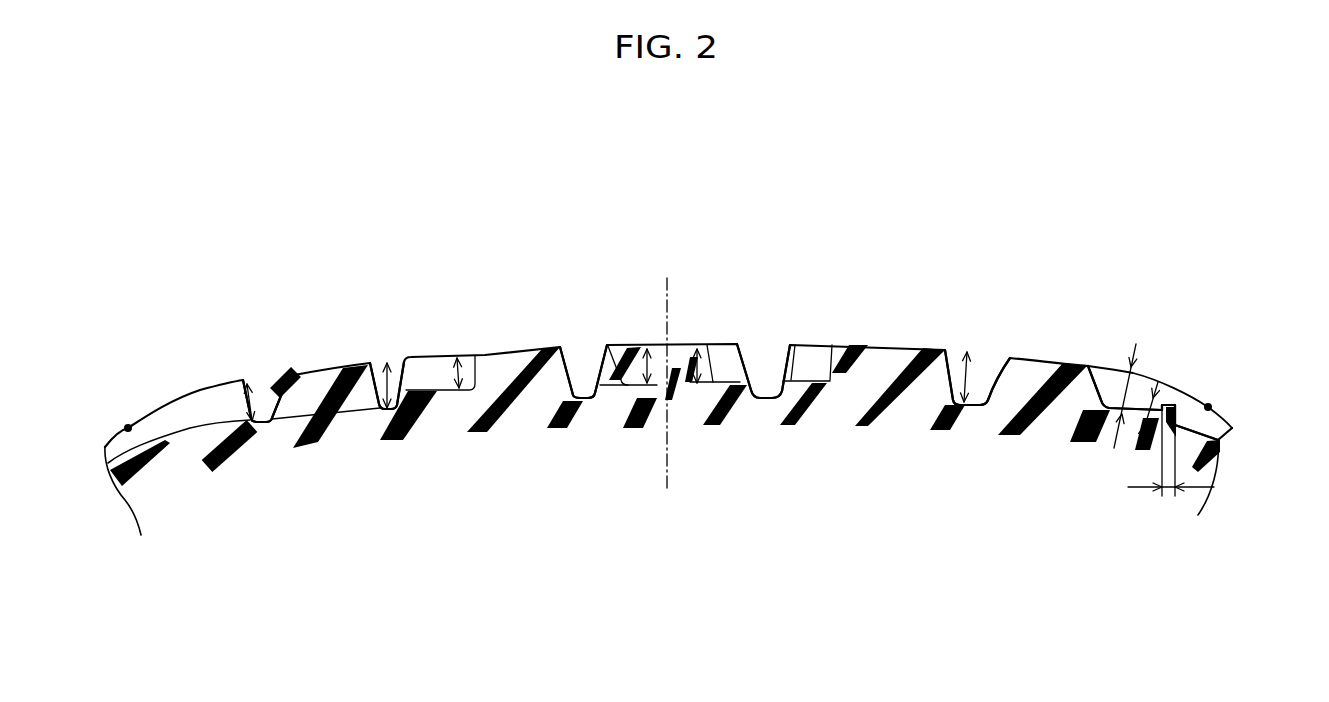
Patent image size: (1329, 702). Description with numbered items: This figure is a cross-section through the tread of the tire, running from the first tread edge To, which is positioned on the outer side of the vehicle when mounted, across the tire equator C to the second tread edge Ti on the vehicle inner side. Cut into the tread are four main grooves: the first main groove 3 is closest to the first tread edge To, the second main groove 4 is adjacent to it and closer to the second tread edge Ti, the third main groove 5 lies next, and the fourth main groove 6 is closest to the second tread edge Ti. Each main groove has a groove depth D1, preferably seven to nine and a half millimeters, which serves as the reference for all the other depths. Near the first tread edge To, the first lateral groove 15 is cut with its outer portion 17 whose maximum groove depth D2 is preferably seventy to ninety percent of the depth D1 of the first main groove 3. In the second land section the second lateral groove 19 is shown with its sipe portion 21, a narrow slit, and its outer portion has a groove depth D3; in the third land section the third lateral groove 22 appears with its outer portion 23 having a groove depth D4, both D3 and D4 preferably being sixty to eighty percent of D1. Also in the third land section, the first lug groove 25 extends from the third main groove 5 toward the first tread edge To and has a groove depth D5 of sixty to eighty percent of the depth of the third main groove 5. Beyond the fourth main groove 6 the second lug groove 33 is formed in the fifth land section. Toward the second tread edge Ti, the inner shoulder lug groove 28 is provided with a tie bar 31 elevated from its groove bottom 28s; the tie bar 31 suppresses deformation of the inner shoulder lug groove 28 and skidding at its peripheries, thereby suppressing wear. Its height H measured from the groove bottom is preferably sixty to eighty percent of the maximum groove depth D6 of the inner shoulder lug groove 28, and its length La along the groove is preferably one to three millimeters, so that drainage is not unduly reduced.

The first lateral groove 15 is at (287, 360).
The outer portion 17 is at (287, 360).
The first main groove 3 is at (397, 340).
The second lateral groove 19 is at (473, 319).
The sipe portion 21 is at (473, 319).
The second main groove 4 is at (583, 328).
The third lateral groove 22 is at (636, 284).
The outer portion 23 is at (636, 284).
The first lug groove 25 is at (716, 283).
The third main groove 5 is at (763, 328).
The second lug groove 33 is at (817, 303).
The fourth main groove 6 is at (987, 333).
The inner shoulder lug groove 28 is at (1125, 334).
The tie bar 31 is at (1196, 359).
The groove bottom 28s is at (1221, 417).
The first tread edge To is at (128, 428).
The second tread edge Ti is at (1208, 407).
The tire equator C is at (662, 370).
The groove depth D1 is at (388, 394).
The groove depth D2 is at (248, 408).
The groove depth D3 is at (462, 374).
The groove depth D4 is at (647, 368).
The groove depth D5 is at (697, 368).
The maximum groove depth D6 is at (1105, 405).
The height H is at (1142, 420).
The length La is at (1168, 493).